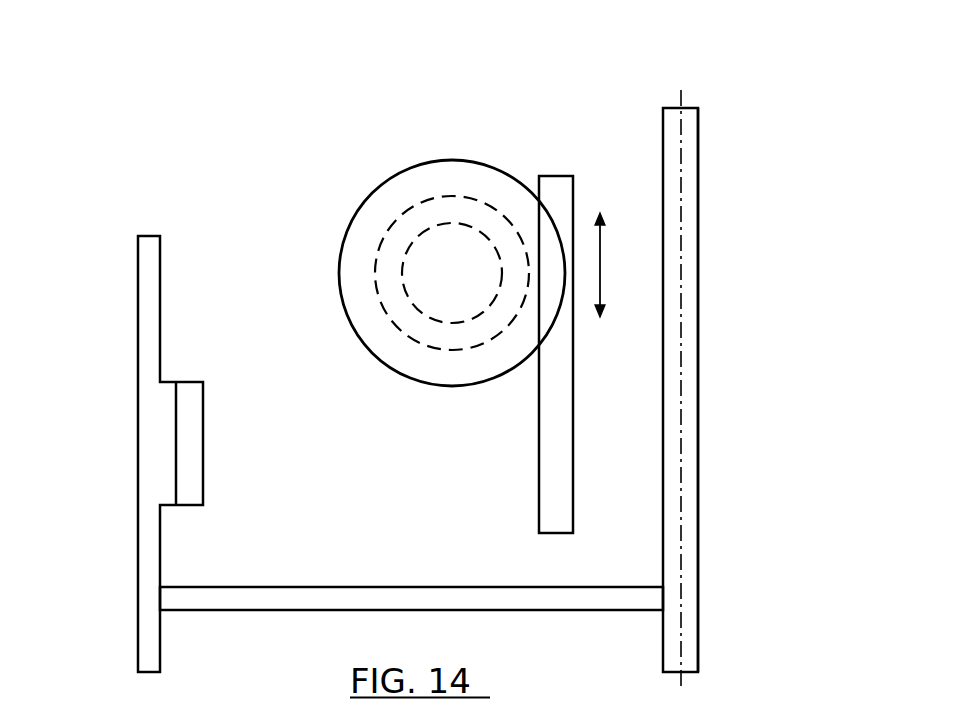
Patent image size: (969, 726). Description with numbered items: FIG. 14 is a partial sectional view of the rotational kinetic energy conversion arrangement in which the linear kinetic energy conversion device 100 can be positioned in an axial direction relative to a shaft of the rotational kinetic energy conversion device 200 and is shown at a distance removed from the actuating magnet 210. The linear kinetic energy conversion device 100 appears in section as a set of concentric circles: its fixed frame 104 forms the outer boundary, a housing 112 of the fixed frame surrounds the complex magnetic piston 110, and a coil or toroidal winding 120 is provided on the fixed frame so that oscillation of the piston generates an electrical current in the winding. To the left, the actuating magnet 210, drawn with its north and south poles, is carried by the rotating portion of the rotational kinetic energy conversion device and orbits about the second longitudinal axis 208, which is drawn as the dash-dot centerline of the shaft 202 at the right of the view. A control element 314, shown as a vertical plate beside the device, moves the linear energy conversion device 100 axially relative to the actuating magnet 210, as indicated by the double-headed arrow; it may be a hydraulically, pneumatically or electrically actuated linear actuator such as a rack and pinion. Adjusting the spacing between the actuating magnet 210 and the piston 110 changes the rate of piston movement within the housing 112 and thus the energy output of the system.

The linear kinetic energy conversion device 100 is at (512, 176).
The fixed frame 104 is at (347, 233).
The housing 112 is at (341, 256).
The complex magnetic piston 110 is at (458, 322).
The coil or toroidal winding 120 is at (420, 368).
The control element 314 is at (573, 498).
The rotational kinetic energy conversion device 200 is at (698, 258).
The shaft surface 202 is at (698, 445).
The second longitudinal axis 208 is at (683, 622).
The actuating magnet 210 is at (188, 478).